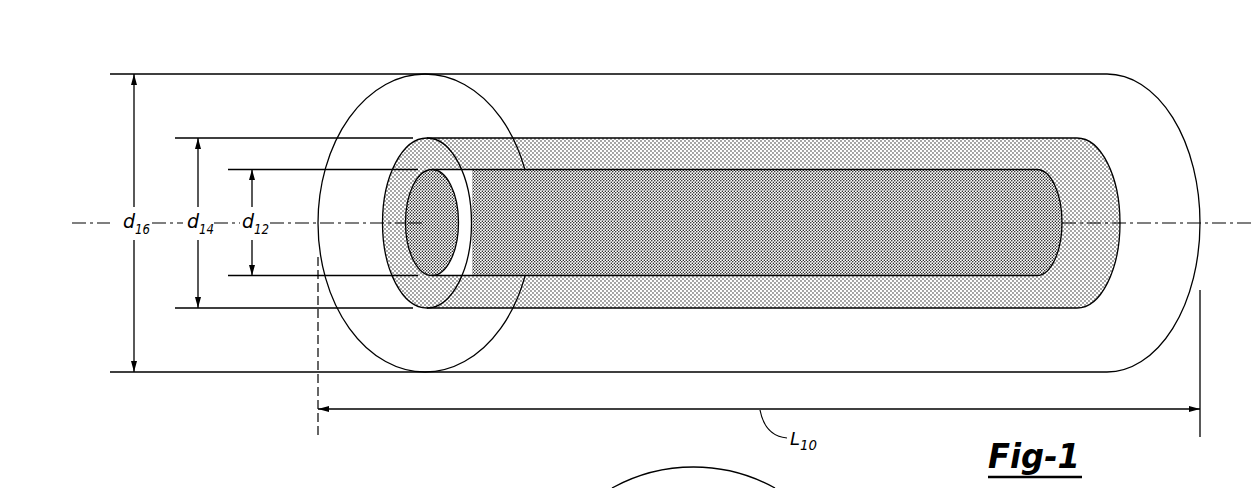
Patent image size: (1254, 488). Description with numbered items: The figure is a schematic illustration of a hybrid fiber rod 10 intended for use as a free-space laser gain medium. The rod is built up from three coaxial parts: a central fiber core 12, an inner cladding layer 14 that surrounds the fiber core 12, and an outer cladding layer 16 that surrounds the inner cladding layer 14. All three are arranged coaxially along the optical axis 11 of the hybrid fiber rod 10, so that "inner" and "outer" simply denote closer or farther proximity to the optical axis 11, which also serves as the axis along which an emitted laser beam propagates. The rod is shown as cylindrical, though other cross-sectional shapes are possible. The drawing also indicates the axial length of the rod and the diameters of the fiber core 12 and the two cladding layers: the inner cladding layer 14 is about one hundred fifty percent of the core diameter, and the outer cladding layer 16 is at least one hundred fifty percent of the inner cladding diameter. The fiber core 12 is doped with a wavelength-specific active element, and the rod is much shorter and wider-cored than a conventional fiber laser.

The hybrid fiber rod 10 is at (774, 204).
The optical axis 11 is at (100, 223).
The fiber core 12 is at (778, 231).
The inner cladding layer 14 is at (996, 162).
The outer cladding layer 16 is at (996, 112).